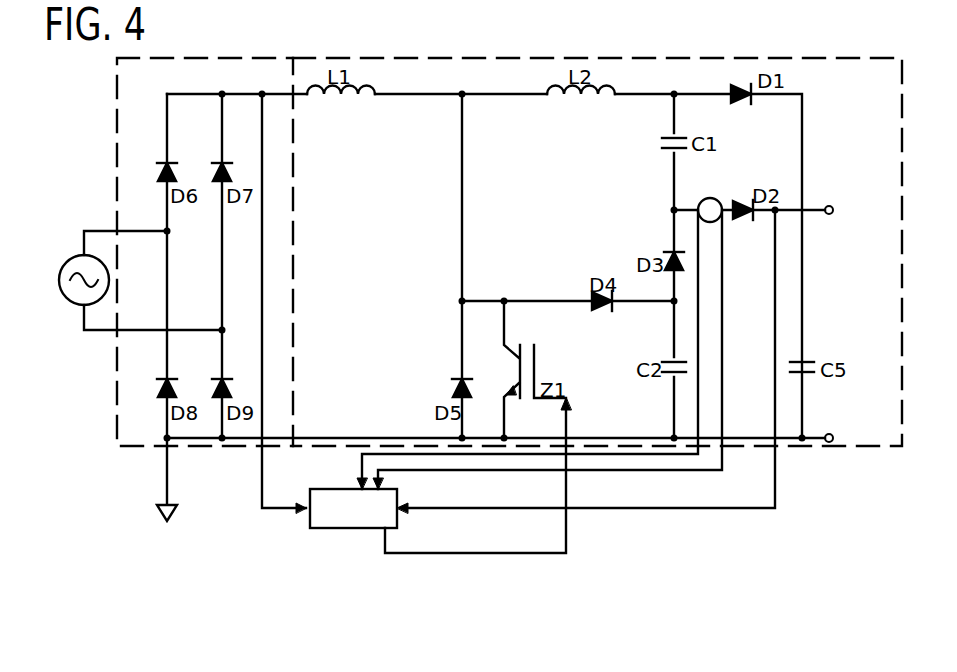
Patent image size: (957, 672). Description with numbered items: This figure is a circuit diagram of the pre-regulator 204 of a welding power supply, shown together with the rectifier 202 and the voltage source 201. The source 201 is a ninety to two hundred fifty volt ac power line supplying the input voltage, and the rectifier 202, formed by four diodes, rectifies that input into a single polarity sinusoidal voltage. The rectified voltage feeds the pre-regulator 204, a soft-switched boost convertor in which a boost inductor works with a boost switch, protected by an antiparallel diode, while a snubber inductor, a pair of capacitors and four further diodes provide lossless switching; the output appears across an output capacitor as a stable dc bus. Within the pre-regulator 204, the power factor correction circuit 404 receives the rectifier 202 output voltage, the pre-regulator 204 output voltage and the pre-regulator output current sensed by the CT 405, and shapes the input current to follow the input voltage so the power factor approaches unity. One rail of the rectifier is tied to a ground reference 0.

The source 201 is at (67, 298).
The rectifier 202 is at (202, 57).
The pre-regulator 204 is at (706, 57).
The power factor correction circuit 404 is at (337, 529).
The CT 405 is at (712, 198).
The ground potential 0 is at (179, 482).